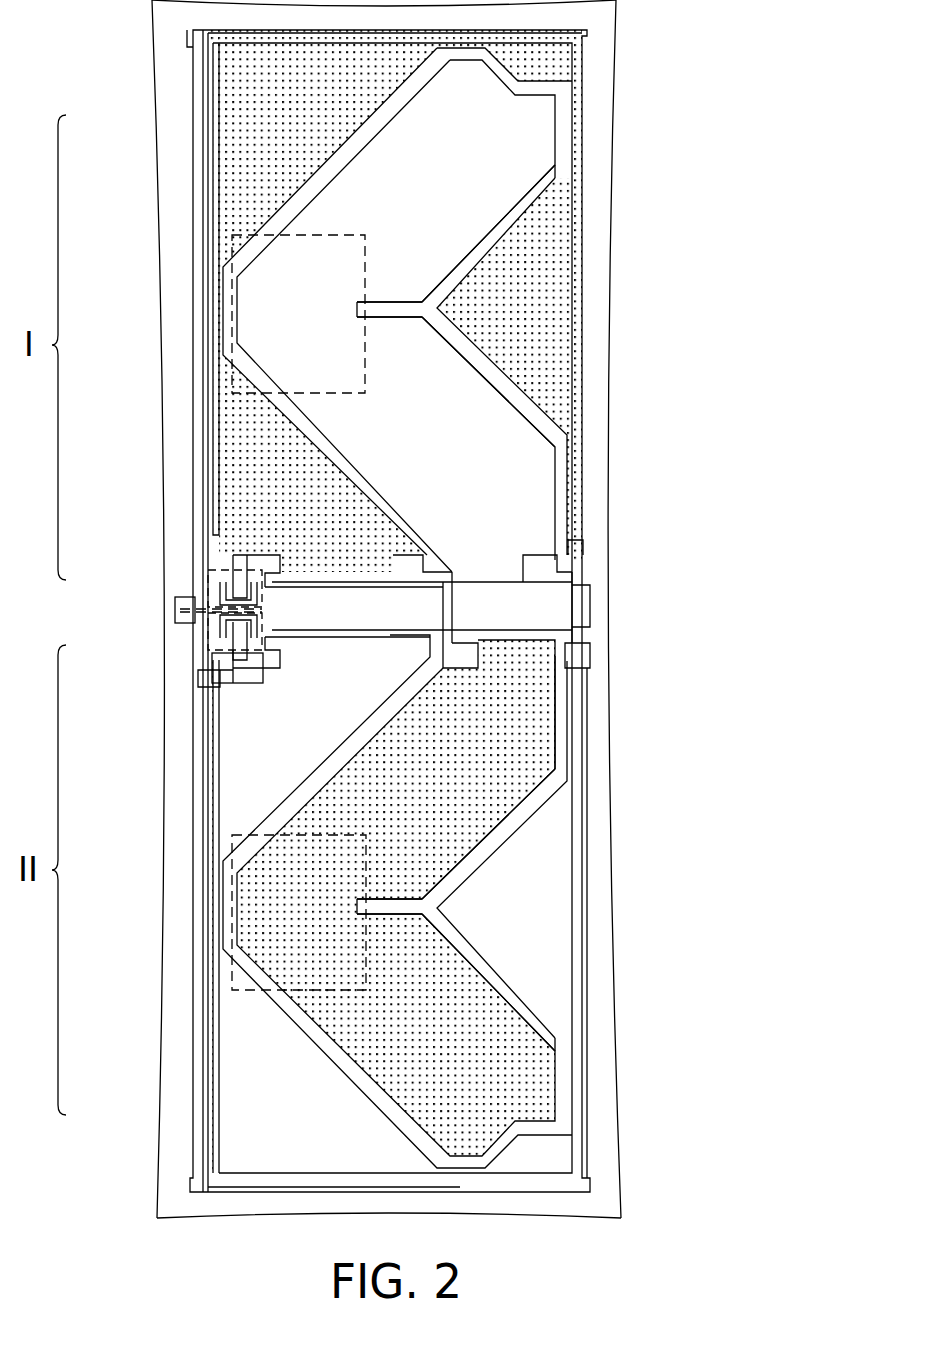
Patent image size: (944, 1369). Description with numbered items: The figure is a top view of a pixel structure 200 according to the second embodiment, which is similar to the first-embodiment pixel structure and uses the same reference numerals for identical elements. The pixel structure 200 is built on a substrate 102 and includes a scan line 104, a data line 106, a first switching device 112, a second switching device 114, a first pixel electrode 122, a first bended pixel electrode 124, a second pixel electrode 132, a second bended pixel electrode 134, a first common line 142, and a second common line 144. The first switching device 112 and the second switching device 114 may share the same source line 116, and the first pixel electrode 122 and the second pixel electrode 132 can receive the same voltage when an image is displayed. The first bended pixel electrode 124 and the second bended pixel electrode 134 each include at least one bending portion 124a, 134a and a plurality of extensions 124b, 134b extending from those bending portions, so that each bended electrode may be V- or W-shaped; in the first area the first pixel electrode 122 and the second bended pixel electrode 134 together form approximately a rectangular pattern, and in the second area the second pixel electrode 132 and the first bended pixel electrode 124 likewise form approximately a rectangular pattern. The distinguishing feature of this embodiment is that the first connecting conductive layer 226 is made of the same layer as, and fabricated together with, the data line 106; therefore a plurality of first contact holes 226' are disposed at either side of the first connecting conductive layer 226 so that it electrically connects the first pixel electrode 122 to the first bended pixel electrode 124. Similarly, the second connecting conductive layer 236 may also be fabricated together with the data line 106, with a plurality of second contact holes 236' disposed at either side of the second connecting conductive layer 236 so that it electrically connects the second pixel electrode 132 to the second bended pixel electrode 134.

The substrate 102 is at (597, 1145).
The scan line 104 is at (588, 598).
The data line 106 is at (207, 1118).
The first switching device 112 is at (200, 583).
The second switching device 114 is at (200, 640).
The source line 116 is at (207, 610).
The first pixel electrode 122 is at (262, 144).
The first bended pixel electrode 124 is at (735, 871).
The bending portion 124a is at (365, 881).
The extensions 124b is at (490, 800).
The second pixel electrode 132 is at (240, 1020).
The second bended pixel electrode 134 is at (735, 272).
The bending portion 134a is at (365, 282).
The extensions 134b is at (490, 200).
The first common line 142 is at (218, 190).
The second common line 144 is at (222, 852).
The pixel structure 200 is at (667, 1268).
The first connecting conductive layer 226 is at (577, 620).
The first contact holes 226' is at (555, 576).
The second connecting conductive layer 236 is at (641, 586).
The second contact holes 236' is at (620, 578).